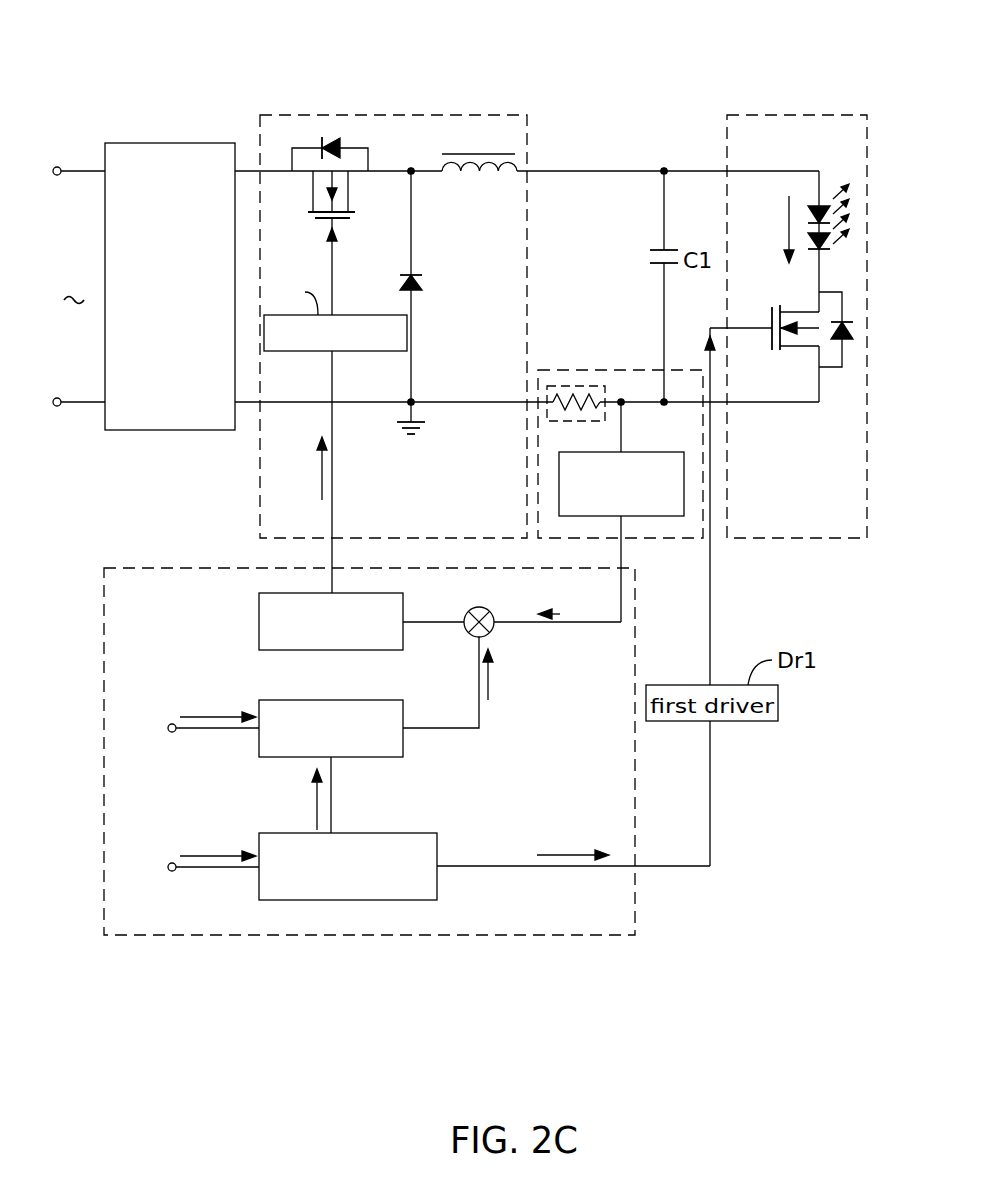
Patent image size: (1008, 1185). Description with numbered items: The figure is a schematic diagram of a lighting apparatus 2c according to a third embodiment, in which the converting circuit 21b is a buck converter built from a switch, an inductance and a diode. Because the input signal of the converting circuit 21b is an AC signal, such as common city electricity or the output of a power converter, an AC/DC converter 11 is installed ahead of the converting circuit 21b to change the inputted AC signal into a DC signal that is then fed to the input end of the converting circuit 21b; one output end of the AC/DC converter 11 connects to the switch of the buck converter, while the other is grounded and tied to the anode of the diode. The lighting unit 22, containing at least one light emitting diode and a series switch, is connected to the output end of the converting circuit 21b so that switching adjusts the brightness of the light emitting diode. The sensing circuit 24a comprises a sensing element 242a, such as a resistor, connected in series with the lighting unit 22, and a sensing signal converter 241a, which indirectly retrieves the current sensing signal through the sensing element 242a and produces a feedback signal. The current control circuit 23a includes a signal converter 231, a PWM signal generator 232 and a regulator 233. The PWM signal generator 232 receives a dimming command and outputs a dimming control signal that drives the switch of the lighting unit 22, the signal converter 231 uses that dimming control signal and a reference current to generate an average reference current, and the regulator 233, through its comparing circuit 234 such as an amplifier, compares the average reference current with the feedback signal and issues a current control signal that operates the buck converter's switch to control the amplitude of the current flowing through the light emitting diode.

The lighting apparatus 2c is at (131, 69).
The AC/DC converter 11 is at (183, 143).
The converting circuit 21b is at (325, 115).
The lighting unit 22 is at (778, 115).
The sensing circuit 24a is at (552, 370).
The sensing element 242a is at (550, 422).
The sensing signal converter 241a is at (637, 452).
The current control circuit 23a is at (208, 566).
The regulator 233 is at (259, 628).
The comparing circuit 234 is at (472, 608).
The signal converter 231 is at (368, 700).
The PWM signal generator 232 is at (383, 833).